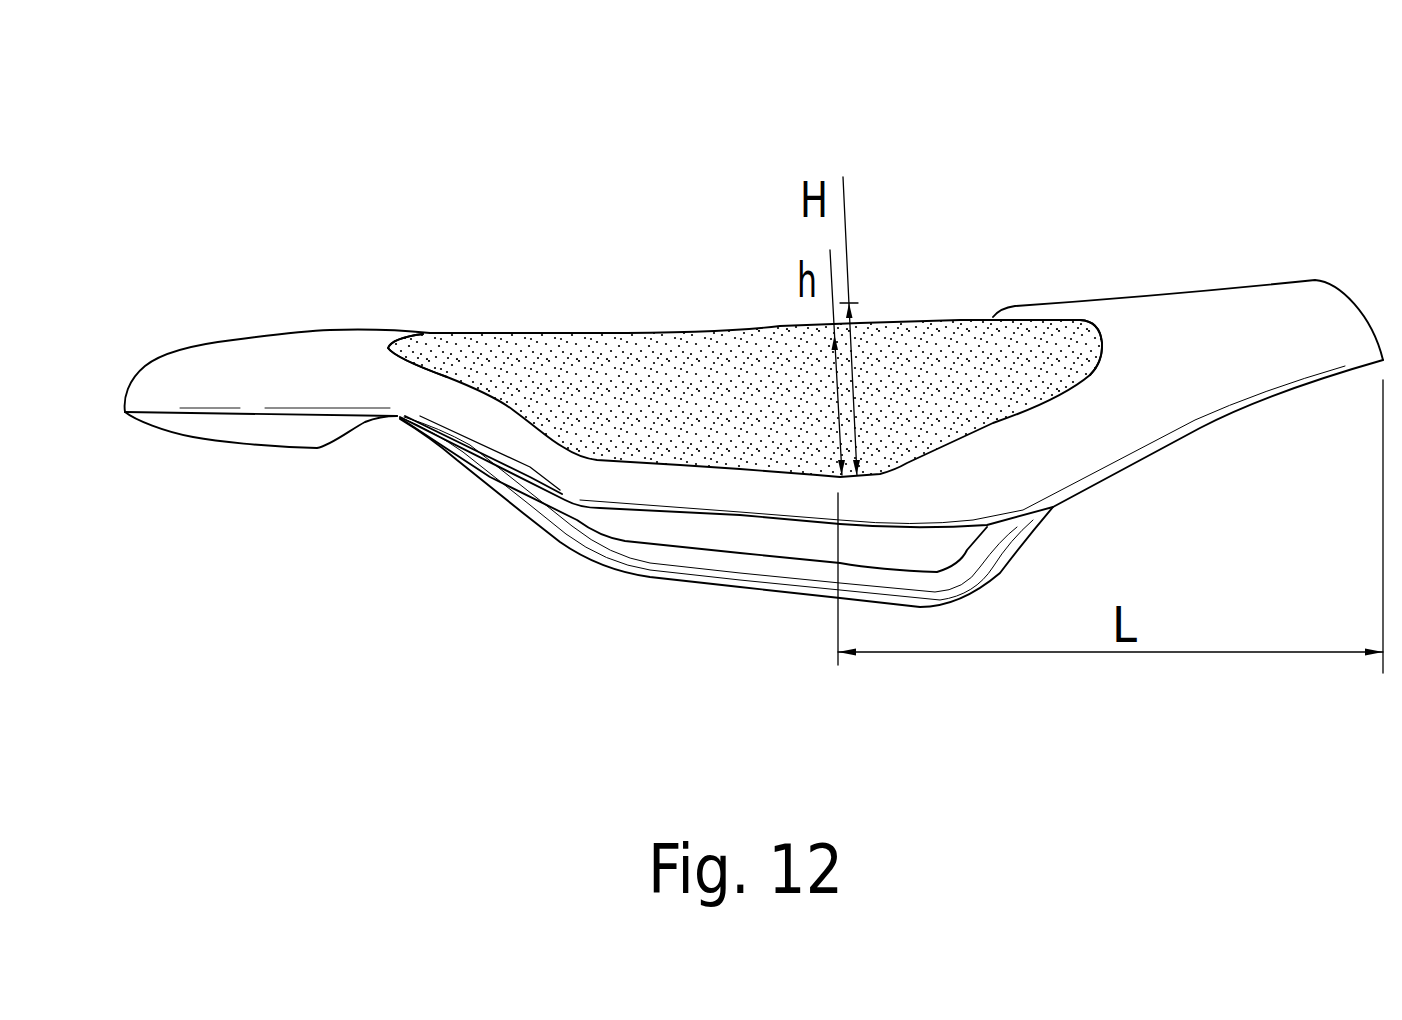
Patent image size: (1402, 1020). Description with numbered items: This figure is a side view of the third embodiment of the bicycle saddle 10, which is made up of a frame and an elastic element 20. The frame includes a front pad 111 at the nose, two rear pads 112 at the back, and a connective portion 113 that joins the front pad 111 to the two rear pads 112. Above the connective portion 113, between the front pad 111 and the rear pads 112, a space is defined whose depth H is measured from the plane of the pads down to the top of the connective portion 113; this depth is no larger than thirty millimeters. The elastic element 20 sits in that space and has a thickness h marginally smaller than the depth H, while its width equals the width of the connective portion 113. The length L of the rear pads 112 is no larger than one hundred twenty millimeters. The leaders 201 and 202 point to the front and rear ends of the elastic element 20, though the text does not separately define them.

The bicycle saddle 10 is at (1215, 205).
The elastic element 20 is at (910, 368).
The front pad 111 is at (265, 360).
The rear pads 112 is at (1282, 317).
The connective portion 113 is at (718, 492).
The front end of cushion pad 201 is at (428, 350).
The rear end of cushion pad 202 is at (1080, 345).